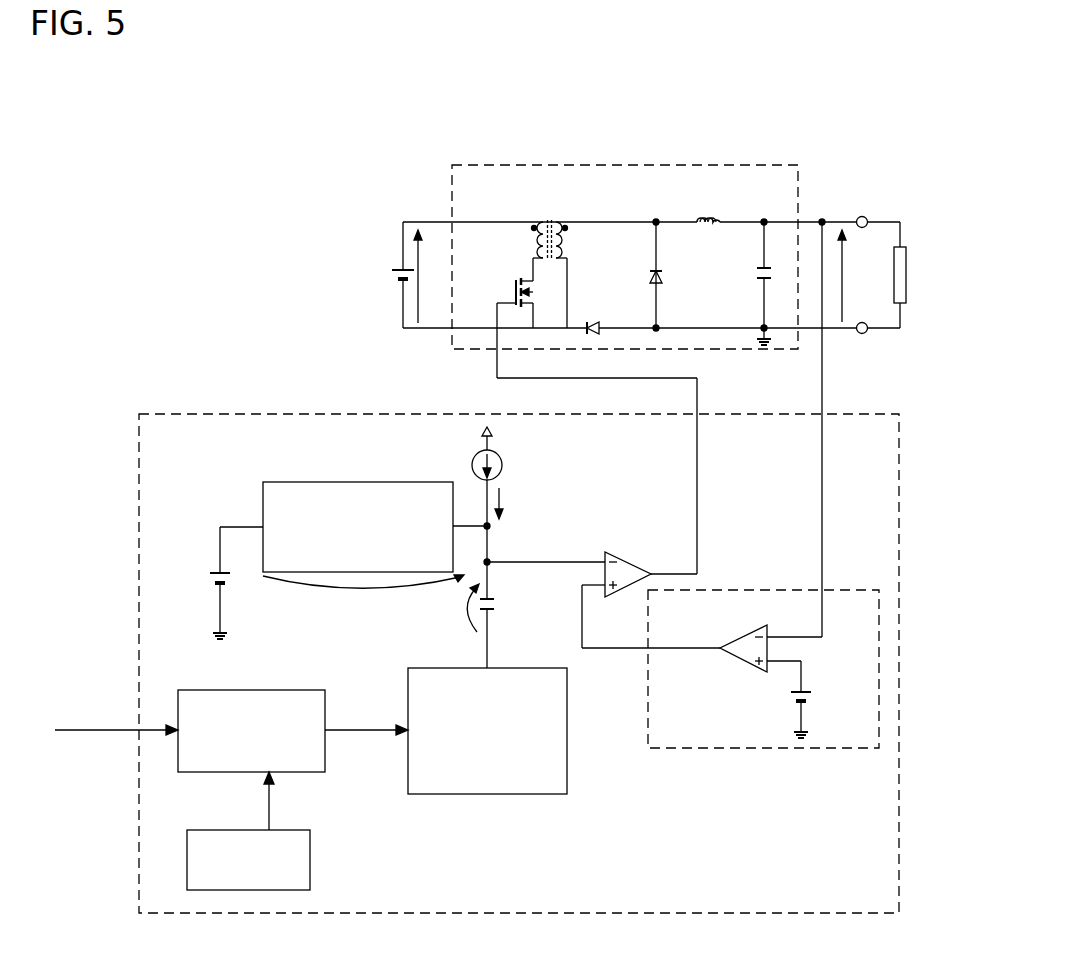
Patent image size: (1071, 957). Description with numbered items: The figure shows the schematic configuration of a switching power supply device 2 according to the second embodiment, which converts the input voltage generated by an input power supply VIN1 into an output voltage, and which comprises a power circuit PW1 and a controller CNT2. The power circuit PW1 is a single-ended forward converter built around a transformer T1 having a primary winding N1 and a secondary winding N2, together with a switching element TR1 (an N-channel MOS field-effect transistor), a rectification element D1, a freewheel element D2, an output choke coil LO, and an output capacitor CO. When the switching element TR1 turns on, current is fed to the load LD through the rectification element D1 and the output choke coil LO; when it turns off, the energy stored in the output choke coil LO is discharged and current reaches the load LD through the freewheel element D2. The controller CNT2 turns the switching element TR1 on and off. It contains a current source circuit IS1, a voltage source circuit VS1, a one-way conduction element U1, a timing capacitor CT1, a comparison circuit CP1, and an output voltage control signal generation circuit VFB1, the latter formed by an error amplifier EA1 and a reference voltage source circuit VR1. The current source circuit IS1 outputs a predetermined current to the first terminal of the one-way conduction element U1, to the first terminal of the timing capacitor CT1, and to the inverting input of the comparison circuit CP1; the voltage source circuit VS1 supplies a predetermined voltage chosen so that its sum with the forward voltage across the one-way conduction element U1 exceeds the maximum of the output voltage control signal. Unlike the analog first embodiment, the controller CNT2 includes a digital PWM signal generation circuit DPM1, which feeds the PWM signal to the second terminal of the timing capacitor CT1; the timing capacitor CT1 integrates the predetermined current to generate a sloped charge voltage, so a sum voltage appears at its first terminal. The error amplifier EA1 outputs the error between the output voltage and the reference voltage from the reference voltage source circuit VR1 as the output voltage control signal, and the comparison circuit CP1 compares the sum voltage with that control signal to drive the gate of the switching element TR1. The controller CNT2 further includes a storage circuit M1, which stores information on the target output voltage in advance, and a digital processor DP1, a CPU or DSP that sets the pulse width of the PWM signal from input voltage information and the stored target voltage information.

The switching power supply device 2 is at (836, 86).
The power circuit PW1 is at (626, 165).
The transformer T1 is at (552, 220).
The primary winding N1 is at (536, 250).
The secondary winding N2 is at (568, 250).
The switching element TR1 is at (510, 290).
The rectification element D1 is at (594, 320).
The freewheel element D2 is at (651, 274).
The output choke coil LO is at (706, 213).
The output capacitor CO is at (754, 274).
The input power supply VIN1 is at (389, 277).
The load LD is at (907, 277).
The controller CNT2 is at (520, 915).
The one-way conduction element U1 is at (362, 482).
The voltage source circuit VS1 is at (208, 578).
The current source circuit IS1 is at (503, 461).
The timing capacitor CT1 is at (500, 606).
The comparison circuit CP1 is at (623, 557).
The output voltage control signal generation circuit VFB1 is at (768, 750).
The error amplifier EA1 is at (742, 637).
The reference voltage source circuit VR1 is at (814, 701).
The digital processor DP1 is at (325, 696).
The digital PWM signal generation circuit DPM1 is at (567, 715).
The storage circuit M1 is at (312, 855).